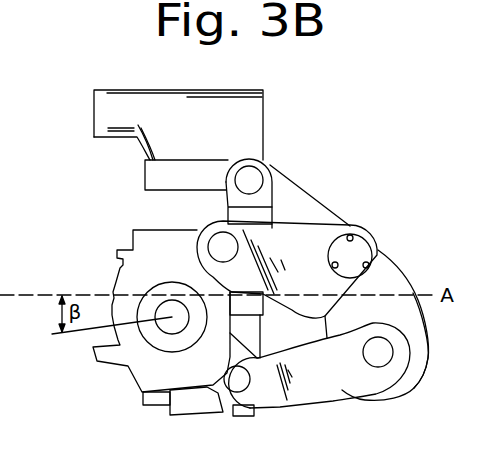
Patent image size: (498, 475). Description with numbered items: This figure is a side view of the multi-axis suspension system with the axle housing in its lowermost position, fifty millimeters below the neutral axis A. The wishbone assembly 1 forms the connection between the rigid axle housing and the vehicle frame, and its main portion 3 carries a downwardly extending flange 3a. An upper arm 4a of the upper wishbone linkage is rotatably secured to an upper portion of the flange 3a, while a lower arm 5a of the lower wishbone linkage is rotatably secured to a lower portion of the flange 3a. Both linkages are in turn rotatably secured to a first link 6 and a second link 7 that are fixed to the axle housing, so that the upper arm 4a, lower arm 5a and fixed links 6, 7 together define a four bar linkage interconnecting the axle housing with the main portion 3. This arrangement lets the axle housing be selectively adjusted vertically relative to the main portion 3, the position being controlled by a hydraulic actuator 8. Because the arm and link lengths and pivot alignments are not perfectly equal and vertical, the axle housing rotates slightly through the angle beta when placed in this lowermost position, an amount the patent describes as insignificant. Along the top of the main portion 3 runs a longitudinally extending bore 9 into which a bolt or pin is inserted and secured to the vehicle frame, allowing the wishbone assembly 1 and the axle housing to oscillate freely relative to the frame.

The wishbone assembly 1 is at (383, 230).
The main portion 3 is at (288, 190).
The downwardly extending flange 3a is at (393, 280).
The upper arm 4a is at (303, 256).
The lower arm 5a is at (318, 387).
The first link 6 is at (223, 288).
The second link 7 is at (231, 405).
The hydraulic actuator 8 is at (268, 165).
The longitudinally extending bore 9 is at (91, 106).